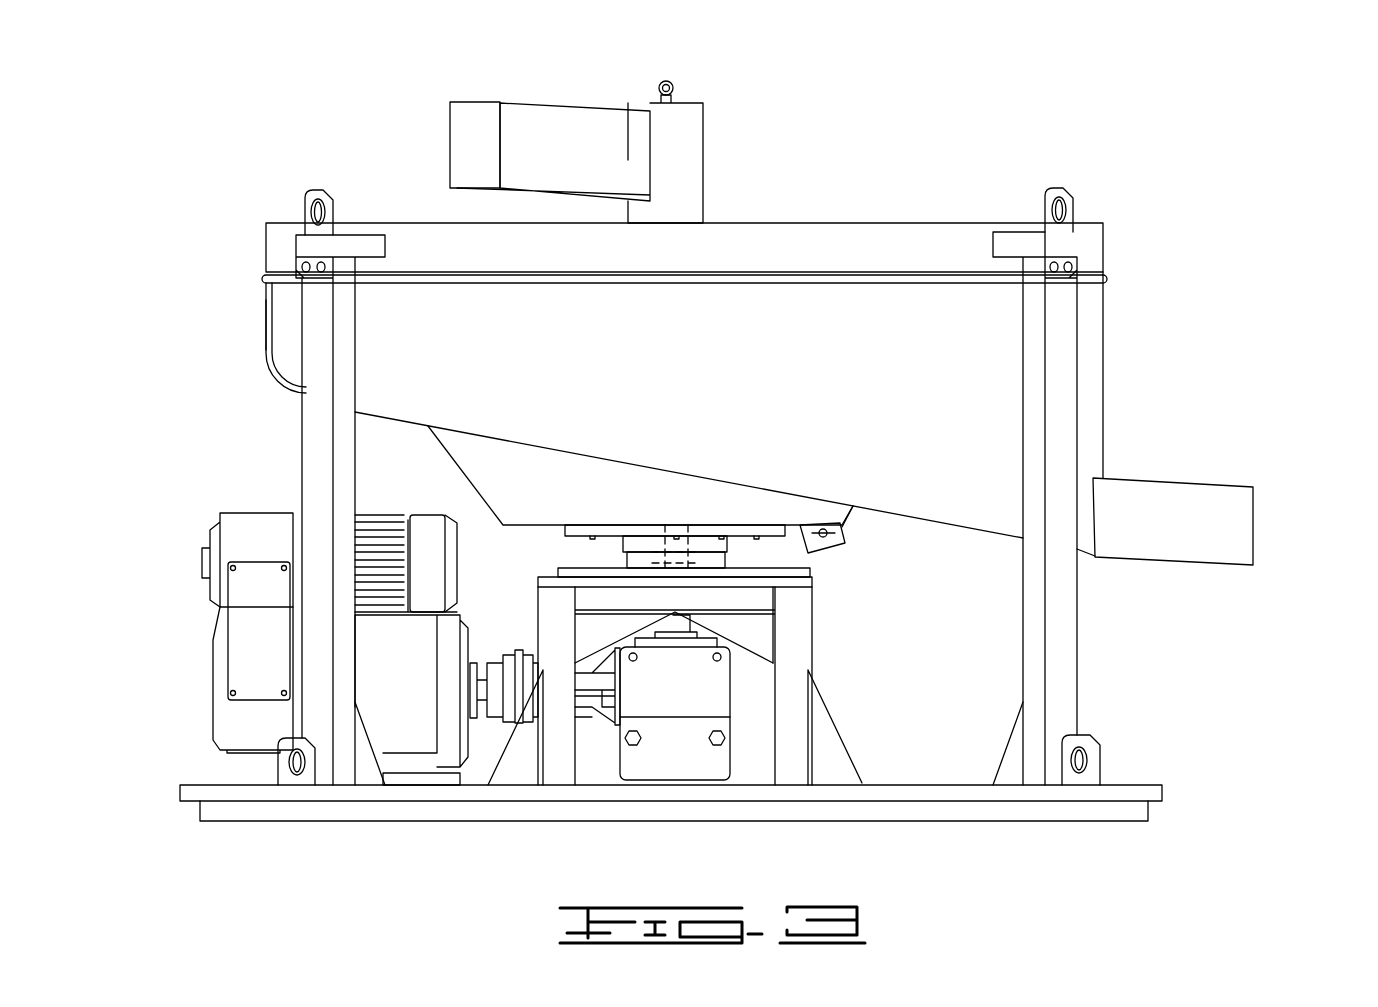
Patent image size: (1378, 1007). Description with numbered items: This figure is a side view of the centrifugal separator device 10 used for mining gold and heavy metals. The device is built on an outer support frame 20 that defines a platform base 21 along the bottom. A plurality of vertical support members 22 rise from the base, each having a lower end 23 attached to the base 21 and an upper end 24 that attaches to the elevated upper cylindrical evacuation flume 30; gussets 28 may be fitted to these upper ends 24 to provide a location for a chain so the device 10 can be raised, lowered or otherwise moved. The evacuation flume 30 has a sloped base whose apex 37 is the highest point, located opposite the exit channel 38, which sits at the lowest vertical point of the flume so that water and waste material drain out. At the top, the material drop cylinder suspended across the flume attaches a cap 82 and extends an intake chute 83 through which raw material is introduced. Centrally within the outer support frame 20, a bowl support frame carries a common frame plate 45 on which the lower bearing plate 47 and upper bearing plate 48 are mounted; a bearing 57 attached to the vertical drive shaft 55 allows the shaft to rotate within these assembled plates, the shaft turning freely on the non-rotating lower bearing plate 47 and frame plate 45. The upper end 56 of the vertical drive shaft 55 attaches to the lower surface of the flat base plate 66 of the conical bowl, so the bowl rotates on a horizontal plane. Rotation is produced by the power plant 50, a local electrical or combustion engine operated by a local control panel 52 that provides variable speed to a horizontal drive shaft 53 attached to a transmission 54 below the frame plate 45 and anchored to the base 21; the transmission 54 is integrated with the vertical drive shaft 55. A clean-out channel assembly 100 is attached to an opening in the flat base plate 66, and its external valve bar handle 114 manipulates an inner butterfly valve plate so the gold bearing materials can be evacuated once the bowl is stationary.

The centrifugal separator device 10 is at (1068, 88).
The outer support frame 20 is at (1087, 633).
The platform base 21 is at (1130, 782).
The vertical support member 22 is at (1067, 430).
The lower end 23 is at (1052, 768).
The upper end 24 is at (1077, 308).
The gusset 28 is at (1072, 190).
The evacuation flume 30 is at (795, 302).
The apex 37 is at (275, 370).
The exit channel 38 is at (1233, 480).
The frame plate 45 is at (683, 580).
The lower bearing plate 47 is at (633, 565).
The upper bearing plate 48 is at (715, 538).
The power plant 50 is at (415, 728).
The local control panel 52 is at (242, 525).
The horizontal drive shaft 53 is at (482, 690).
The transmission 54 is at (667, 695).
The vertical drive shaft 55 is at (673, 623).
The upper end 56 is at (632, 538).
The bearing 57 is at (683, 573).
The flat base plate 66 is at (535, 520).
The cap 82 is at (703, 122).
The intake chute 83 is at (450, 114).
The clean-out channel assembly 100 is at (838, 545).
The external valve bar handle 114 is at (845, 533).